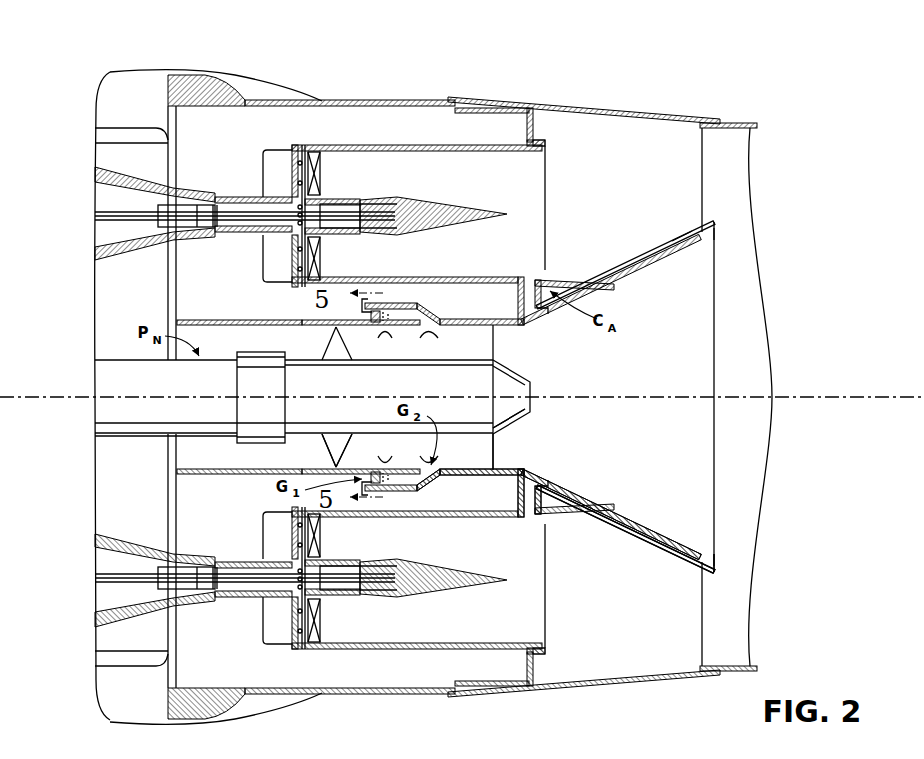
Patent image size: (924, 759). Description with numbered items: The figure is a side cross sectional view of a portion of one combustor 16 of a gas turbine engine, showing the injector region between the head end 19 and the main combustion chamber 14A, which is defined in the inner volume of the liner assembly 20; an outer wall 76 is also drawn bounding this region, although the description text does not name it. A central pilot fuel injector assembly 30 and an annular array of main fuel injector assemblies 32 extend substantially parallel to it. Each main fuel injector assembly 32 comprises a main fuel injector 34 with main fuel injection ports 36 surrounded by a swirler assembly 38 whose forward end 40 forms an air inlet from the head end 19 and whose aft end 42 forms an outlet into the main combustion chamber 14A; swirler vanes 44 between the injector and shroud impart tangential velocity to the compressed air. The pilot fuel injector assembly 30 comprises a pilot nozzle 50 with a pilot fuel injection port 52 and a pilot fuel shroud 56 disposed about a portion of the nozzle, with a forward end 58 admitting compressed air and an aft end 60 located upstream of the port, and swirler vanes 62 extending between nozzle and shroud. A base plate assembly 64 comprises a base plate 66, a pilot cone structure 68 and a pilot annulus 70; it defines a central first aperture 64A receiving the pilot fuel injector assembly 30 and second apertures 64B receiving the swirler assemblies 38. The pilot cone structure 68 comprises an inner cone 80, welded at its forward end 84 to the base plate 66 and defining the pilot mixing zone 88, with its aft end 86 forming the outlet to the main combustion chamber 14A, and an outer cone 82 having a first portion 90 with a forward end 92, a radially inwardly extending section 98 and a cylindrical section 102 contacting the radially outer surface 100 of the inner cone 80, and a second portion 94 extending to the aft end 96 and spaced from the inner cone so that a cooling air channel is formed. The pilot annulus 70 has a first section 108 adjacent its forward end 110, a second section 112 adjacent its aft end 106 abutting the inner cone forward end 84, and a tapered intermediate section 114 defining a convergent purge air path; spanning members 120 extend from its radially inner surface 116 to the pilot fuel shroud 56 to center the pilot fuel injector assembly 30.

The combustor 16 is at (669, 70).
The liner assembly 20 is at (736, 121).
The outer nacelle wall 76 is at (386, 100).
The head end 19 is at (198, 149).
The main fuel injection ports 36 is at (294, 182).
The swirler assembly 38 is at (378, 143).
The forward end 40 is at (262, 182).
The swirler vanes 44 is at (322, 180).
The main fuel injector 34 is at (427, 207).
The aft end 42 is at (547, 167).
The second apertures 64B is at (533, 152).
The first aperture 64A is at (410, 276).
The first section 108 is at (370, 301).
The pilot annulus 70 is at (424, 302).
The base plate 66 is at (490, 316).
The base plate assembly 64 is at (498, 316).
The cylindrical section 102 is at (546, 278).
The first portion 90 is at (574, 279).
The outer cone 82 is at (660, 244).
The aft end 96 is at (680, 233).
The aft end 86 is at (714, 273).
The inner cone 80 is at (668, 257).
The pilot cone structure 68 is at (545, 312).
The pilot mixing zone 88 is at (628, 358).
The main combustion chamber 14A is at (746, 320).
The forward end 110 is at (345, 319).
The spanning members 120 is at (404, 325).
The aft end 60 is at (425, 326).
The forward end 58 is at (177, 320).
The pilot fuel shroud 56 is at (180, 320).
The swirler vanes 62 is at (333, 342).
The pilot fuel injection port 52 is at (529, 390).
The pilot fuel injector assembly 30 is at (95, 410).
The pilot nozzle 50 is at (150, 425).
The radially inner surface 116 is at (374, 467).
The second section 112 is at (452, 452).
The forward end 84 is at (493, 446).
The aft end 106 is at (494, 455).
The intermediate section 114 is at (434, 488).
The forward end 92 is at (544, 498).
The radially outer surface 100 is at (584, 494).
The radially inwardly extending section 98 is at (527, 494).
The second portion 94 is at (621, 543).
The main fuel injector assemblies 32 is at (93, 258).